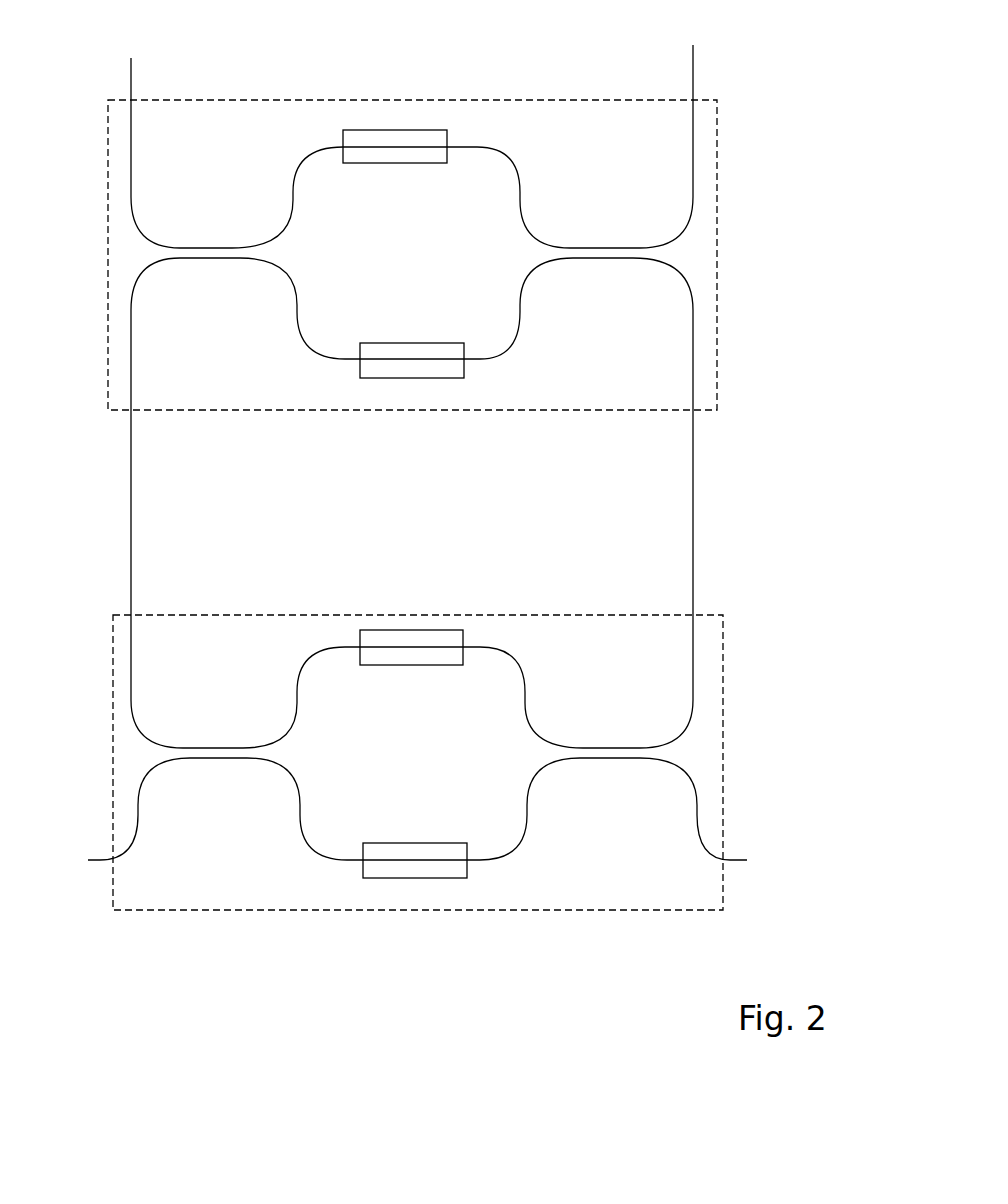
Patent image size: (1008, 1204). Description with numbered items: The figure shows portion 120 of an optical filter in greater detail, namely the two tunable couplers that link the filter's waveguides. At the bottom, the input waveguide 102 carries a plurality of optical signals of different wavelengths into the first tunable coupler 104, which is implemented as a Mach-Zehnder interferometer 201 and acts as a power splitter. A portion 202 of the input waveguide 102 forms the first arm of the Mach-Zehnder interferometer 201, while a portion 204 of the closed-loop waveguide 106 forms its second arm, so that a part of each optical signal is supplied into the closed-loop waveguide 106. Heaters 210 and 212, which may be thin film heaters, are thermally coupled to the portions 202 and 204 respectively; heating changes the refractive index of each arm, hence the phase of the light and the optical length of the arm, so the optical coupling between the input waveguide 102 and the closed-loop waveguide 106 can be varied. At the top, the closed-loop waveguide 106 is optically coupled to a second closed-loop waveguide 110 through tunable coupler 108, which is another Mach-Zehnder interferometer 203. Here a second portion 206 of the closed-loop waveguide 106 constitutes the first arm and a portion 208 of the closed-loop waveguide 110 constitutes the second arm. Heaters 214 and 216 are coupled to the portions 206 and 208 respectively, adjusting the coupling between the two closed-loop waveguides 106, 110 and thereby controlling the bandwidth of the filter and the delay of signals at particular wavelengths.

The input waveguide 102 is at (97, 862).
The tunable coupler 104 is at (723, 720).
The closed-loop waveguide 106 is at (693, 533).
The tunable coupler 108 is at (717, 315).
The closed-loop waveguide 110 is at (693, 72).
The portion of optical filter 120 is at (584, 994).
The Mach-Zehnder interferometer 201 is at (557, 695).
The portion of input waveguide 202 is at (300, 808).
The Mach-Zehnder interferometer 203 is at (265, 195).
The portion of closed-loop waveguide 204 is at (297, 698).
The second portion of closed-loop waveguide 206 is at (297, 307).
The portion of closed-loop waveguide 208 is at (520, 175).
The heater 210 is at (390, 878).
The heater 212 is at (390, 630).
The heater 214 is at (447, 378).
The heater 216 is at (363, 130).